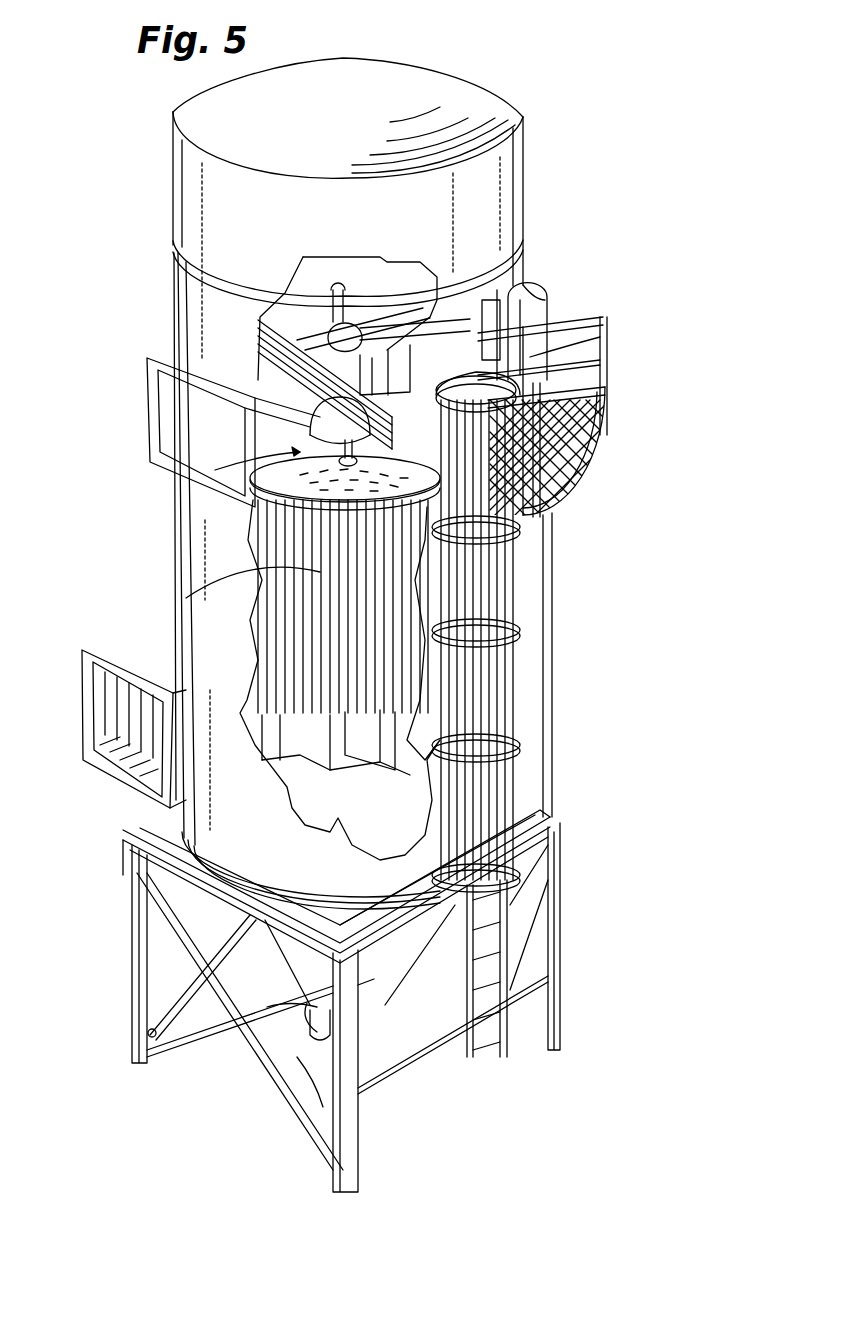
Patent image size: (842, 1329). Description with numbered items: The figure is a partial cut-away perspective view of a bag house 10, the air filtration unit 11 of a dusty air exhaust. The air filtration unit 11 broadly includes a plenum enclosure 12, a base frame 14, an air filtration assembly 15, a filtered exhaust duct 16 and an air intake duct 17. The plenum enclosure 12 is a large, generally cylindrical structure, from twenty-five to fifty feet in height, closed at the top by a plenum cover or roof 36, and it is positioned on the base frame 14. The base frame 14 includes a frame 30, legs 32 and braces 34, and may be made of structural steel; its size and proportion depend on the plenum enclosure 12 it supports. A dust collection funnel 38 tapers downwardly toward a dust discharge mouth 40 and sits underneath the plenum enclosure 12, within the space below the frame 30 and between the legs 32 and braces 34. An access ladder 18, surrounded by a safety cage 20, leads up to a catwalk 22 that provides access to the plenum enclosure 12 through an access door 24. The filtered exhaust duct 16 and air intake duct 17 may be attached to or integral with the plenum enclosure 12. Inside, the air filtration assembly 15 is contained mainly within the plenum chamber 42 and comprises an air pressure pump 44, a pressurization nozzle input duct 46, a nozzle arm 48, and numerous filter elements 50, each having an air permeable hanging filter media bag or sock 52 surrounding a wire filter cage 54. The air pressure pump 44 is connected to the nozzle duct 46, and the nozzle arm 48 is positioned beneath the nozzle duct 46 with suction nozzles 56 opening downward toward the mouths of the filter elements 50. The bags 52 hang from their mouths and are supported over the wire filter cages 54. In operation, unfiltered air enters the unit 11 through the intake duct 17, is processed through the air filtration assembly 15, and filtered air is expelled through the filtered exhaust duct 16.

The reactor apparatus 10 is at (255, 535).
The air filtration unit 11 is at (452, 65).
The plenum enclosure 12 is at (165, 172).
The base frame 14 is at (120, 912).
The air filtration assembly 15 is at (245, 470).
The filtered exhaust duct 16 is at (143, 368).
The air intake duct 17 is at (85, 665).
The access ladder 18 is at (510, 597).
The safety cage 20 is at (520, 770).
The catwalk 22 is at (605, 443).
The access door 24 is at (603, 345).
The frame 30 is at (140, 826).
The legs 32 is at (130, 975).
The braces 34 is at (263, 1088).
The plenum cover or roof 36 is at (475, 105).
The dust collection funnel 38 is at (260, 1058).
The dust discharge mouth 40 is at (300, 1105).
The plenum chamber 42 is at (270, 345).
The air pressure pump 44 is at (558, 915).
The pressurization nozzle input duct 46 is at (453, 272).
The nozzle arm 48 is at (255, 447).
The filter elements 50 is at (258, 512).
The filter media bags or socks 52 is at (245, 588).
The filter cages 54 is at (245, 488).
The suction nozzles 56 is at (280, 407).